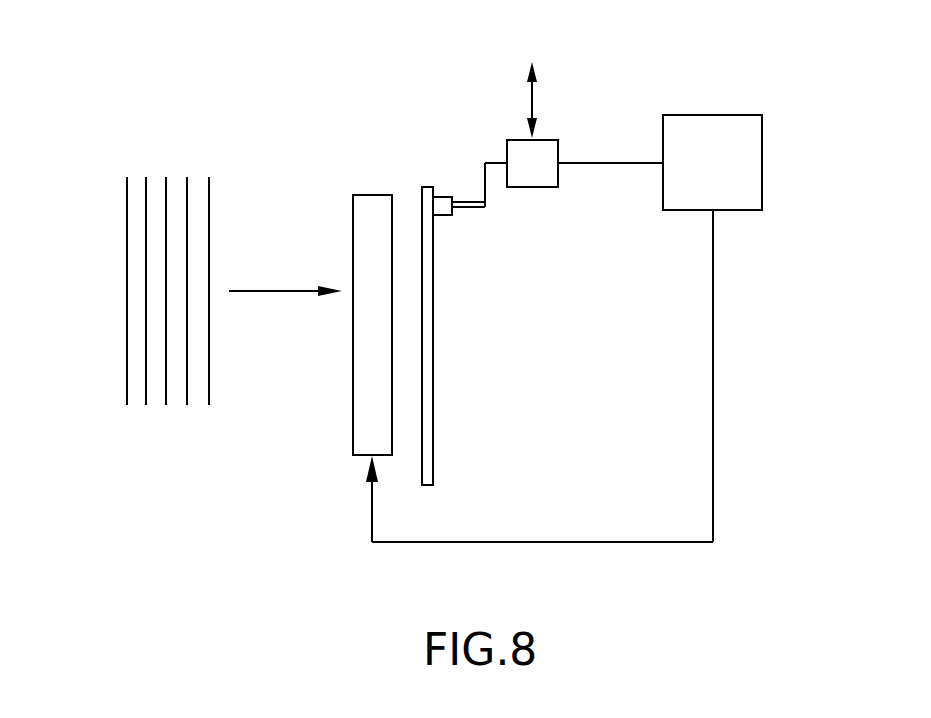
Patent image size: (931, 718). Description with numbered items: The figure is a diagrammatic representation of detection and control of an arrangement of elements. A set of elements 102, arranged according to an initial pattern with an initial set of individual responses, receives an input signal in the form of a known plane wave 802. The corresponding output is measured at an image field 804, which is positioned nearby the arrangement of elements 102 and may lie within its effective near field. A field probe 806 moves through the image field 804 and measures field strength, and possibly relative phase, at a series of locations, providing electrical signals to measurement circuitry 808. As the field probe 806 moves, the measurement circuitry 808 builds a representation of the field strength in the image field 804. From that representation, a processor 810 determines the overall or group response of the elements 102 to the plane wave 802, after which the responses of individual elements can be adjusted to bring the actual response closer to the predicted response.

The plane wave 802 is at (209, 206).
The elements 102 is at (373, 195).
The image field 804 is at (425, 187).
The field probe 806 is at (437, 215).
The measurement circuitry 808 is at (545, 138).
The processor 810 is at (735, 173).